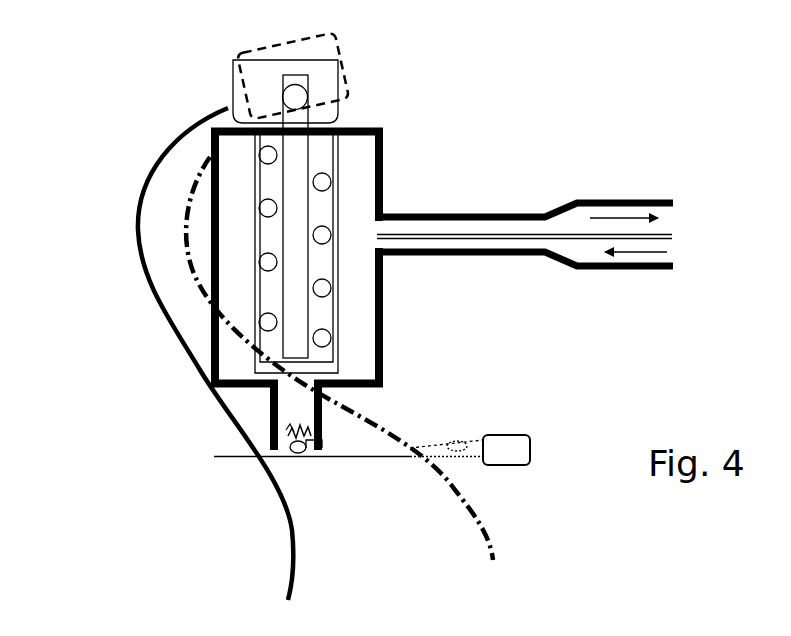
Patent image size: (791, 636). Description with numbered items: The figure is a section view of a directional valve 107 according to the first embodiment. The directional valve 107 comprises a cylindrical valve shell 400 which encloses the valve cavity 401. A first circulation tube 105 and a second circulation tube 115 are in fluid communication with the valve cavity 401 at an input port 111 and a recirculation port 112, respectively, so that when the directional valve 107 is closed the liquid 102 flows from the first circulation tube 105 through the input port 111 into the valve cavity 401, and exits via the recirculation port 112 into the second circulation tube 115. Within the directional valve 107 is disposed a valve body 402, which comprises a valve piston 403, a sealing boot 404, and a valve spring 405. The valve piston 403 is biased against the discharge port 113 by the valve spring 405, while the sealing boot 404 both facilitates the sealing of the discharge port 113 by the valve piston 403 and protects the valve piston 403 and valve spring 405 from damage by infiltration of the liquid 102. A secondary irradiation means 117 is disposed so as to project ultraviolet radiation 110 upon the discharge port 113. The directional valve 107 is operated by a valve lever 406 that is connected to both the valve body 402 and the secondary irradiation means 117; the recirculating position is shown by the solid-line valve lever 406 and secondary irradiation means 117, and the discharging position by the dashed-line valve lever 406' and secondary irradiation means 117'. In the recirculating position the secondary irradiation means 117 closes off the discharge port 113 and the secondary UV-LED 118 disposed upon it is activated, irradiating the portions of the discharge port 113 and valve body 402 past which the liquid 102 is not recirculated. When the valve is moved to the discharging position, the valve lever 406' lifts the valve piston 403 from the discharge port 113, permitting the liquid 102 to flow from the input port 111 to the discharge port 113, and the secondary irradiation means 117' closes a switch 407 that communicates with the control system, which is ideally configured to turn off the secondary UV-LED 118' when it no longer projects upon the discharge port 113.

The directional valve 107 is at (468, 42).
The cylindrical valve shell 400 is at (380, 143).
The valve cavity 401 is at (362, 200).
The valve body 402 is at (232, 224).
The valve piston 403 is at (333, 127).
The sealing boot 404 is at (347, 197).
The valve spring 405 is at (330, 244).
The valve lever 406 is at (169, 354).
The valve lever 406' is at (393, 358).
The recirculation port 112 is at (407, 213).
The first circulation tube 105 is at (663, 272).
The input port 111 is at (377, 243).
The second circulation tube 115 is at (657, 200).
The liquid 102 is at (620, 217).
The discharge port 113 is at (303, 405).
The secondary UV-LED 118 is at (224, 416).
The secondary irradiation means 117 is at (312, 486).
The ultraviolet radiation 110 is at (323, 442).
The secondary UV-LED 118' is at (456, 396).
The secondary irradiation means 117' is at (474, 418).
The switch 407 is at (538, 447).